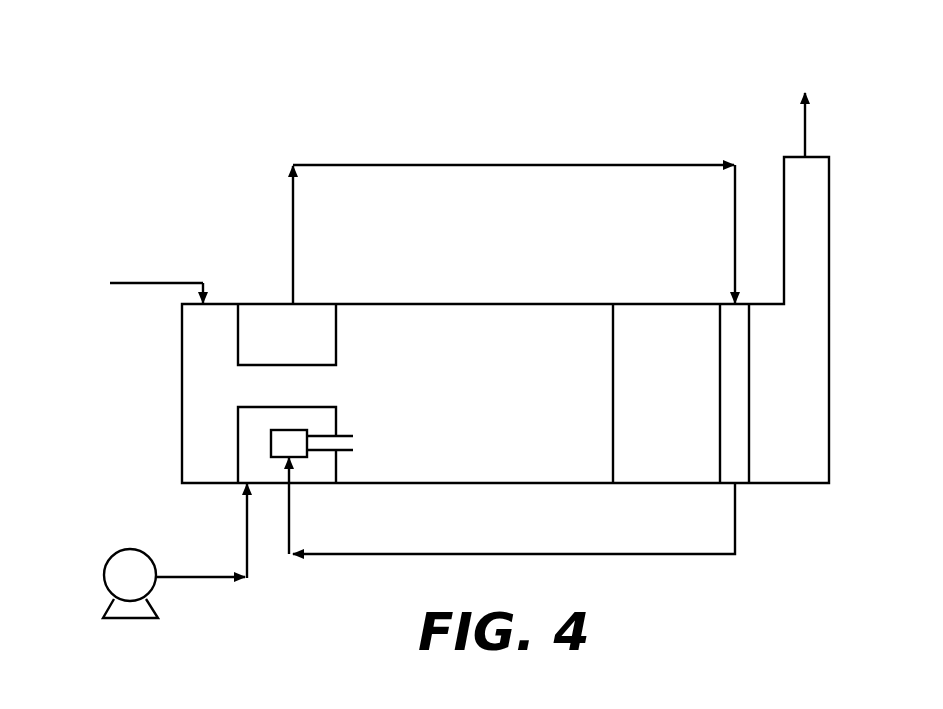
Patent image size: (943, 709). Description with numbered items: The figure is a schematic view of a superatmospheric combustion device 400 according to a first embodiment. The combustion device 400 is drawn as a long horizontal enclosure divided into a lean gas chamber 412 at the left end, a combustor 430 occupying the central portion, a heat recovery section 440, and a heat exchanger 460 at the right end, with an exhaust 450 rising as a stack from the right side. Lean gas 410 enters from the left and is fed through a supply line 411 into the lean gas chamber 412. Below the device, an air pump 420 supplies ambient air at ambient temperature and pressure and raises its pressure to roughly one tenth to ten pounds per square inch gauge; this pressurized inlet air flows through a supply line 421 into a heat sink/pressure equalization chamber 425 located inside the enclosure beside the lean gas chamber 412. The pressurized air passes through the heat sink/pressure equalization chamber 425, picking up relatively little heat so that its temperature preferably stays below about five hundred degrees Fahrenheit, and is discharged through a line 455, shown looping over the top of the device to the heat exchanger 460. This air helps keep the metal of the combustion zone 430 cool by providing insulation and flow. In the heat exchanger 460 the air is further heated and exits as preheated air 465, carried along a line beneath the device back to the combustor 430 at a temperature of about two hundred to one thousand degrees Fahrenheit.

The superatmospheric combustion device 400 is at (192, 142).
The lean gas 410 is at (100, 327).
The supply line 411 is at (137, 283).
The lean gas chamber 412 is at (195, 348).
The air pump 420 is at (103, 580).
The supply line 421 is at (187, 580).
The heat sink/pressure equalization chamber 425 is at (237, 447).
The combustor 430 is at (517, 402).
The heat recovery section 440 is at (685, 402).
The exhaust 450 is at (805, 96).
The line 455 is at (410, 165).
The heat exchanger 460 is at (740, 398).
The preheated air 465 is at (453, 554).